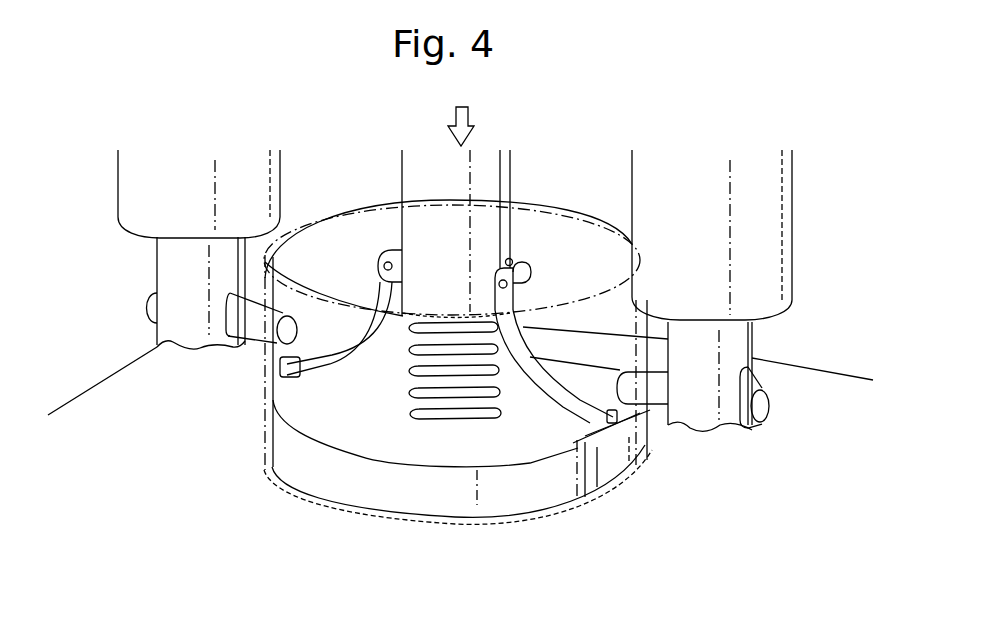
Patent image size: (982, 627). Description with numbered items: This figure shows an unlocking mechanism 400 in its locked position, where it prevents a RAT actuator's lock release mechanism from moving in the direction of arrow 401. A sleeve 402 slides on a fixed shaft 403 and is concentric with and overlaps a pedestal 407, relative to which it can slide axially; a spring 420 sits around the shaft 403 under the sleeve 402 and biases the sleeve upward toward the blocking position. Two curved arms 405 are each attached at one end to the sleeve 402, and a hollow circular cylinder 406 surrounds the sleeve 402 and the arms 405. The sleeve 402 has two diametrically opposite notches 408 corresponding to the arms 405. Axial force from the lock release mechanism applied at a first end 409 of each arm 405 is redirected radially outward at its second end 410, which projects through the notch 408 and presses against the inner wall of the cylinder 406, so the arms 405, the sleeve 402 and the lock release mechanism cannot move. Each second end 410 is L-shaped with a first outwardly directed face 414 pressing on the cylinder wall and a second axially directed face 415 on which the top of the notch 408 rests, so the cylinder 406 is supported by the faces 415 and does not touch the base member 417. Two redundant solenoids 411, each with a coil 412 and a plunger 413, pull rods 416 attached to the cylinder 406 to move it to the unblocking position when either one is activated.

The unlocking mechanism 400 is at (314, 155).
The arrow 401 is at (452, 118).
The sleeve 402 is at (413, 173).
The fixed shaft 403 is at (436, 424).
The curved arms 405 is at (361, 368).
The hollow circular cylinder 406 is at (576, 206).
The pedestal 407 is at (330, 432).
The notches 408 is at (263, 396).
The first end of arm 409 is at (510, 262).
The second end of arm 410 is at (598, 410).
The solenoids 411 is at (135, 264).
The coil 412 is at (128, 186).
The plunger 413 is at (173, 312).
The first outwardly directed face 414 is at (580, 433).
The second axially directed face 415 is at (614, 445).
The rod 416 is at (253, 333).
The base member 417 is at (135, 432).
The spring 420 is at (471, 398).